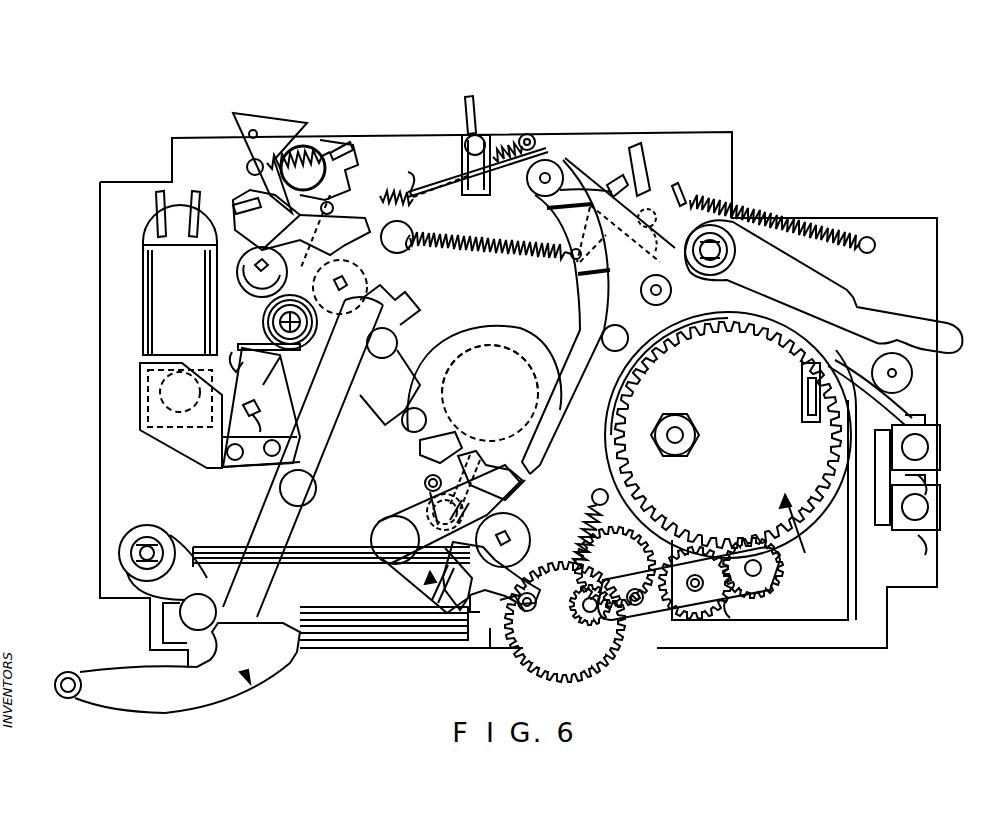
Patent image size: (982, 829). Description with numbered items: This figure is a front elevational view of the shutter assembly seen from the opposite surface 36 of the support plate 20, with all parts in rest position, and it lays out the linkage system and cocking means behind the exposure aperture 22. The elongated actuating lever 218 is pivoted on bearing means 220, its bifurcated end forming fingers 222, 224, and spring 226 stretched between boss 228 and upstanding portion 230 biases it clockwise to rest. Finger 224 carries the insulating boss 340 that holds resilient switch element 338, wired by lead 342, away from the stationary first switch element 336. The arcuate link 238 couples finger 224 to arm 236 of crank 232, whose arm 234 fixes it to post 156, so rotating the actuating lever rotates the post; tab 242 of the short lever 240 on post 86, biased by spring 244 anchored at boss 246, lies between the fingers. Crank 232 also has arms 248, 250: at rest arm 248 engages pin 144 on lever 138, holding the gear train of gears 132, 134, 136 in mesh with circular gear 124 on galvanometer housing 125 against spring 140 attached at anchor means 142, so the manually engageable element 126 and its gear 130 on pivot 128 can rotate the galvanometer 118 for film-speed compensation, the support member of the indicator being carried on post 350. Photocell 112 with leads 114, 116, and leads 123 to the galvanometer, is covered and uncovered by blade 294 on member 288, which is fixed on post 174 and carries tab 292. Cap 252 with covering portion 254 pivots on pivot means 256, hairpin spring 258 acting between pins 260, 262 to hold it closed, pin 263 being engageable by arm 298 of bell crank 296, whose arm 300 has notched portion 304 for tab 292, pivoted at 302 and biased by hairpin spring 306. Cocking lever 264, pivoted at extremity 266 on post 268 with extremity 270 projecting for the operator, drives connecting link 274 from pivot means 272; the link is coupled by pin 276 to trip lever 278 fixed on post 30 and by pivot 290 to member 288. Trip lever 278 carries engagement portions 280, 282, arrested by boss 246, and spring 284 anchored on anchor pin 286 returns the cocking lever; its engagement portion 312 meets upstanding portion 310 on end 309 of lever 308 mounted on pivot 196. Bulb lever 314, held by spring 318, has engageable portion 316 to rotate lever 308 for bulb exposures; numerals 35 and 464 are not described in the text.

The support plate 20 is at (425, 650).
The exposure aperture 22 is at (476, 328).
The post 30 is at (350, 302).
The pulley 35 is at (898, 373).
The opposite surface 36 is at (490, 642).
The post 86 is at (648, 229).
The photocell 112 is at (160, 388).
The lead 114 is at (157, 210).
The lead 116 is at (197, 205).
The galvanometer 118 is at (775, 527).
The electrical conductive leads 123 is at (920, 428).
The circular gear 124 is at (805, 553).
The galvanometer housing 125 is at (605, 440).
The manually engageable element 126 is at (552, 672).
The pivot 128 is at (612, 618).
The circular gear 130 is at (589, 622).
The gear 132 is at (662, 615).
The gear 134 is at (722, 610).
The gear 136 is at (786, 578).
The lever 138 is at (735, 595).
The spring 140 is at (592, 497).
The anchor means 142 is at (565, 545).
The pin 144 is at (528, 612).
The post 156 is at (508, 535).
The post 174 is at (253, 466).
The pivot 196 is at (258, 278).
The actuating lever 218 is at (885, 318).
The bearing means 220 is at (714, 250).
The finger 222 is at (638, 148).
The finger 224 is at (585, 180).
The spring 226 is at (832, 228).
The boss 228 is at (870, 238).
The upstanding portion 230 is at (677, 185).
The crank 232 is at (430, 590).
The arm 234 is at (518, 545).
The arm 236 is at (395, 578).
The link 238 is at (585, 300).
The lever 240 is at (600, 248).
The tab 242 is at (617, 180).
The spring 244 is at (465, 253).
The boss 246 is at (420, 245).
The arm 248 is at (503, 575).
The arm 250 is at (470, 456).
The cap 252 is at (478, 345).
The covering portion 254 is at (520, 370).
The pivot means 256 is at (415, 522).
The spring 258 is at (430, 508).
The pin 260 is at (425, 483).
The pin 262 is at (516, 476).
The second pin 263 is at (426, 416).
The cocking lever 264 is at (250, 683).
The extremity 266 is at (128, 542).
The post 268 is at (160, 545).
The extremity 270 is at (112, 700).
The pivot means 272 is at (212, 618).
The connecting link 274 is at (265, 575).
The pin 276 is at (397, 338).
The trip lever 278 is at (395, 254).
The engagement portion 280 is at (402, 315).
The engagement portion 282 is at (397, 205).
The spring 284 is at (396, 196).
The anchor pin 286 is at (527, 135).
The member 288 is at (262, 412).
The pivot 290 is at (300, 498).
The tab 292 is at (272, 378).
The blade 294 is at (172, 440).
The bell crank 296 is at (380, 360).
The arm 298 is at (418, 452).
The arm 300 is at (248, 350).
The pivot 302 is at (292, 334).
The notched portion 304 is at (222, 412).
The hairpin spring 306 is at (263, 320).
The lever 308 is at (292, 236).
The end 309 is at (252, 198).
The upstanding portion 310 is at (245, 205).
The engagement portion 312 is at (243, 238).
The bulb lever 314 is at (272, 135).
The engageable portion 316 is at (290, 205).
The spring 318 is at (303, 150).
The first switch element 336 is at (478, 196).
The resilient switch element 338 is at (545, 143).
The boss 340 is at (542, 182).
The lead 342 is at (475, 105).
The post 350 is at (672, 291).
The slot 464 is at (848, 462).